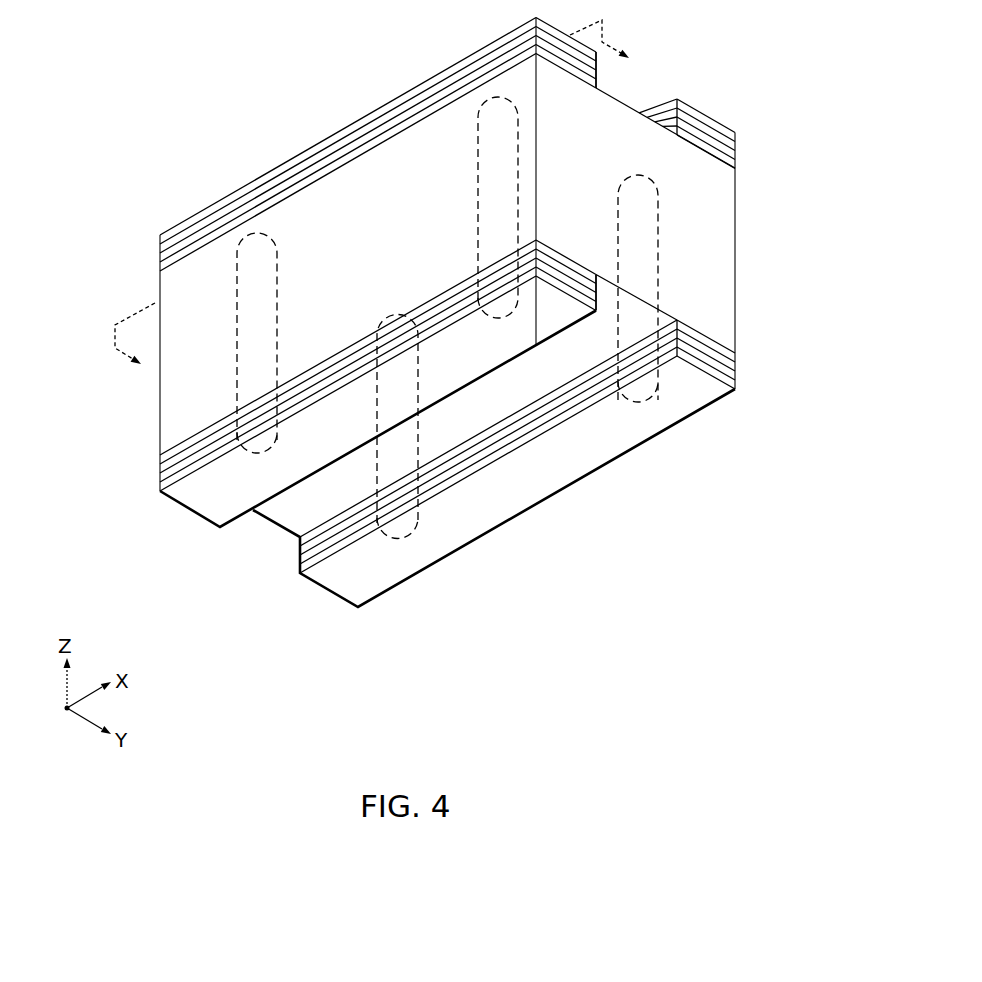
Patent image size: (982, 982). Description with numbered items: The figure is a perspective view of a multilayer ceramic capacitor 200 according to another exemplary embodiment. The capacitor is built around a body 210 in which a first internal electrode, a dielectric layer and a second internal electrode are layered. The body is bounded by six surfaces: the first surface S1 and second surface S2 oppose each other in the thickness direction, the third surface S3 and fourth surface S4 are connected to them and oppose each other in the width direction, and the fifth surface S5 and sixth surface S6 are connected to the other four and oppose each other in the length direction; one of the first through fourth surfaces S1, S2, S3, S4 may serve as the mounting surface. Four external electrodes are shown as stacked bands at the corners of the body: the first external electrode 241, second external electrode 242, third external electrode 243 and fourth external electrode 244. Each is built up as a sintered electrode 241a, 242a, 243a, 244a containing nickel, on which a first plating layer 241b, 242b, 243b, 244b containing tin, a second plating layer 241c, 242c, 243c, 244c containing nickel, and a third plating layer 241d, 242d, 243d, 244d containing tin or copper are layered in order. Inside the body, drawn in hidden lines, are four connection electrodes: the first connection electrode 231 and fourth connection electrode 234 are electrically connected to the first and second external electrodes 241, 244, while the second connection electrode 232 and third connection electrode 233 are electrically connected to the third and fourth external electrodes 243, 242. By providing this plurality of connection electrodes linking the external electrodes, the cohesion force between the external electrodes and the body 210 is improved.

The multilayer ceramic capacitor 200 is at (252, 70).
The body 210 is at (286, 534).
The first connection electrode 231 is at (257, 455).
The second connection electrode 232 is at (397, 538).
The third connection electrode 233 is at (640, 400).
The fourth connection electrode 234 is at (498, 320).
The first external electrode 241 is at (66, 460).
The sintered electrode 241a is at (160, 460).
The first plating layer 241b is at (160, 469).
The second plating layer 241c is at (160, 478).
The third plating layer 241d is at (160, 487).
The second external electrode 242 is at (830, 340).
The sintered electrode 242a is at (735, 357).
The first plating layer 242b is at (735, 366).
The second plating layer 242c is at (735, 375).
The third plating layer 242d is at (735, 384).
The third external electrode 243 is at (830, 105).
The sintered electrode 243a is at (735, 164).
The first plating layer 243b is at (735, 155).
The second plating layer 243c is at (735, 146).
The third plating layer 243d is at (735, 137).
The fourth external electrode 244 is at (66, 200).
The sintered electrode 244a is at (160, 267).
The first plating layer 244b is at (160, 257).
The second plating layer 244c is at (160, 248).
The third plating layer 244d is at (160, 238).
The first surface S1 is at (292, 215).
The second surface S2 is at (353, 486).
The third surface S3 is at (230, 254).
The fourth surface S4 is at (493, 495).
The fifth surface S5 is at (265, 509).
The sixth surface S6 is at (624, 140).